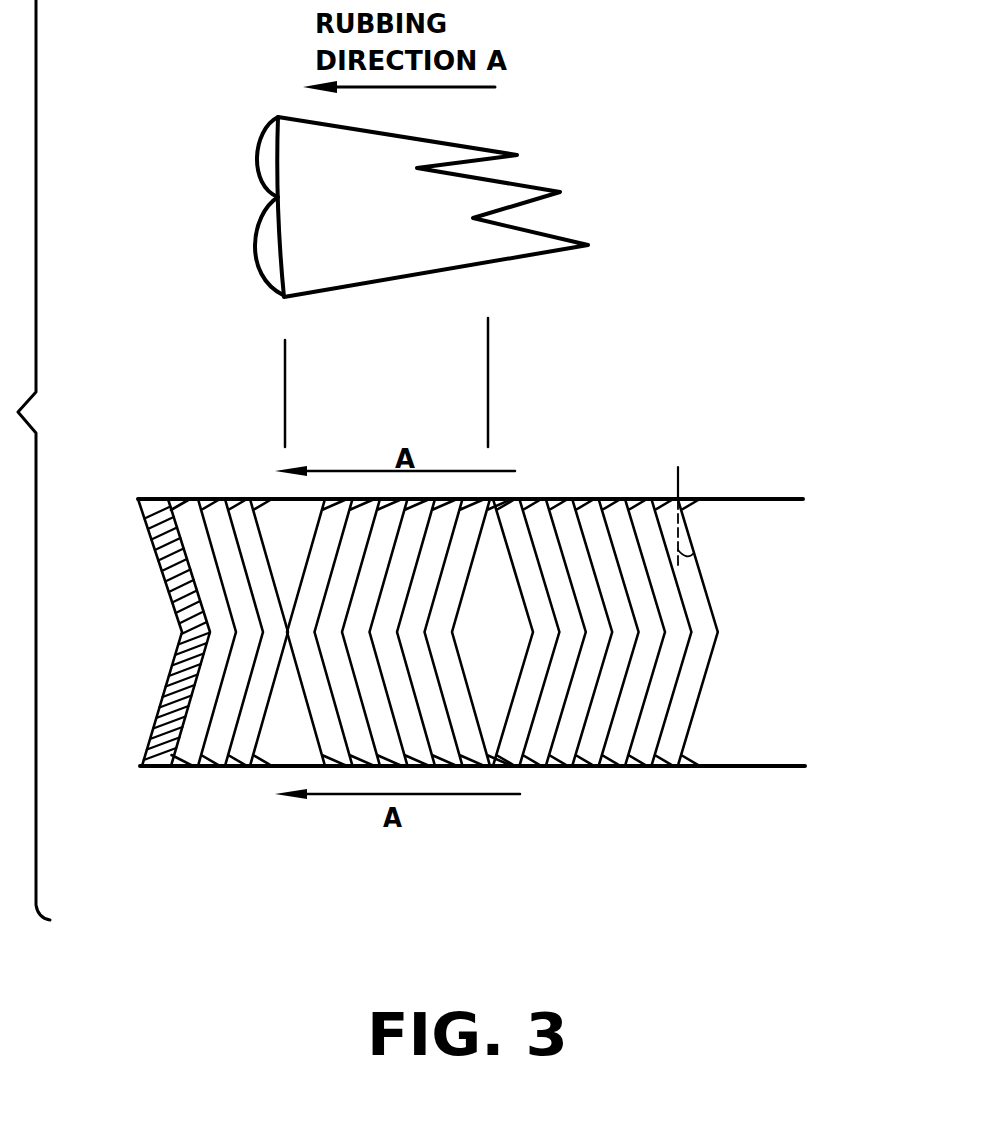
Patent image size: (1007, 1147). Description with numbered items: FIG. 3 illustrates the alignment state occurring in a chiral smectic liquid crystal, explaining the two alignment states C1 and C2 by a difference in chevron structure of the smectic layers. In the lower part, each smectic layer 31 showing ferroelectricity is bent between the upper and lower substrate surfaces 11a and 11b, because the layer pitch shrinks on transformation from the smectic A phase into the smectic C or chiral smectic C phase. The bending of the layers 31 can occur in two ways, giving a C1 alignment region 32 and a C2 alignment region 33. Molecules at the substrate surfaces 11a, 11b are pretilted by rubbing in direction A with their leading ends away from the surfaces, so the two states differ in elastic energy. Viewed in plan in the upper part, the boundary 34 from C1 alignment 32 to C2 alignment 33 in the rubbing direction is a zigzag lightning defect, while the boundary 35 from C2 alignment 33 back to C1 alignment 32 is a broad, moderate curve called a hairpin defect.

The substrate surface 11a is at (777, 498).
The substrate surface 11b is at (750, 767).
The smectic layer 31 is at (697, 675).
The C1 alignment region 32 is at (285, 848).
The C2 alignment region 33 is at (497, 848).
The lightning defect 34 is at (470, 143).
The hairpin defect 35 is at (275, 497).